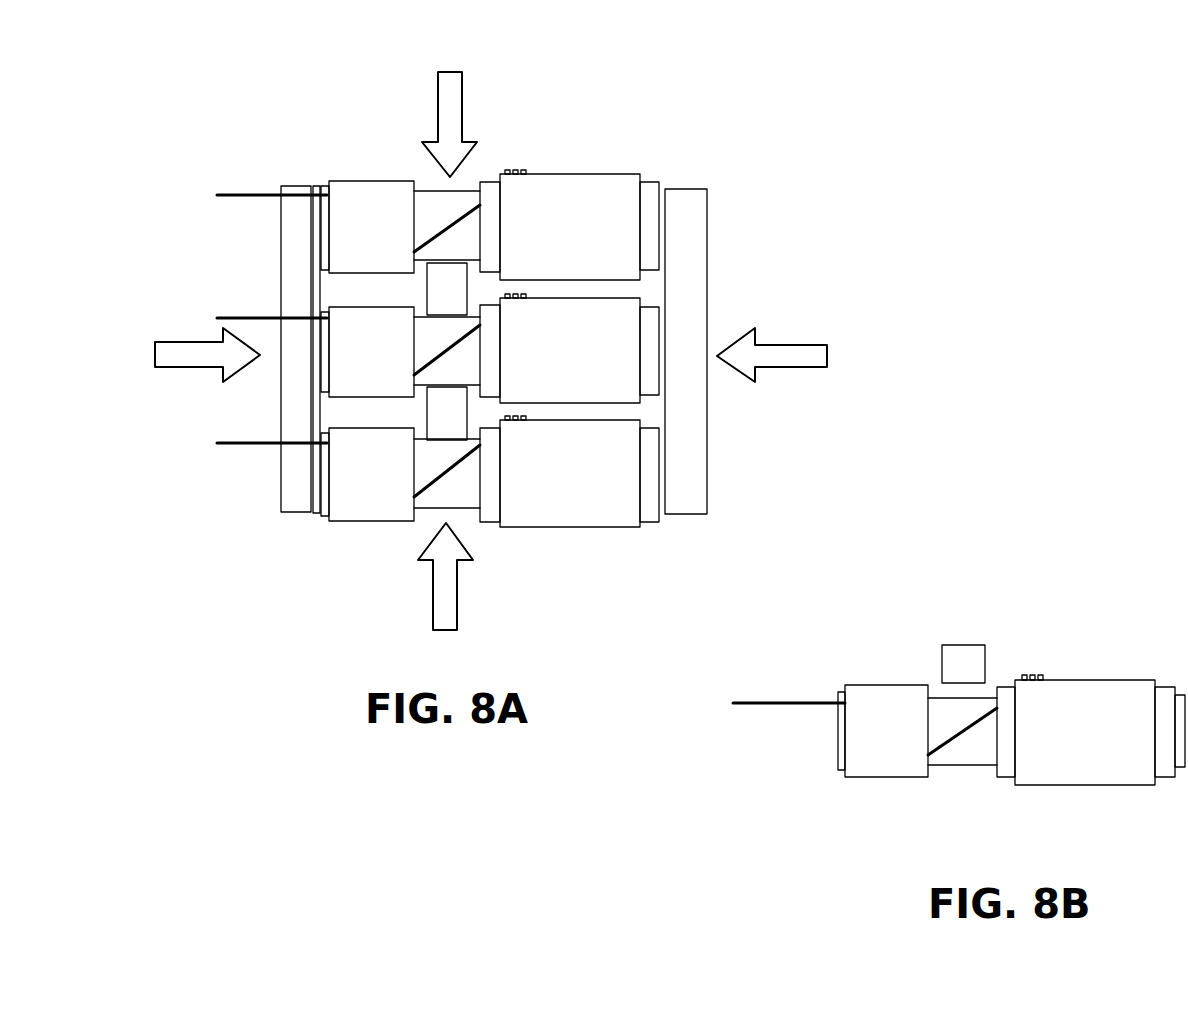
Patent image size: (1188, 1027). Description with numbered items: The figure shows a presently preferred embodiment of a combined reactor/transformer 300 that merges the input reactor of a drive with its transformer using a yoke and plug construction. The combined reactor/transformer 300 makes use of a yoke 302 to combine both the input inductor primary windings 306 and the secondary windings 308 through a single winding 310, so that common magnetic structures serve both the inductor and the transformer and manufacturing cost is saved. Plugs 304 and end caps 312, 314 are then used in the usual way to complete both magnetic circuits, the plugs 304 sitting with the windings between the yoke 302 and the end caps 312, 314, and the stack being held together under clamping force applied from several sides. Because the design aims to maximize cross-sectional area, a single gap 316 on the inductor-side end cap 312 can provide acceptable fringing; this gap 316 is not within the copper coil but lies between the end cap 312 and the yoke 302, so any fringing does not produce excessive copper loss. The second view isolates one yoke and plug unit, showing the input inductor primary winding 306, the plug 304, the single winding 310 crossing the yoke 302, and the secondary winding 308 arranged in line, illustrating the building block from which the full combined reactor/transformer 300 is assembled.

In FIG. 8A, the combined reactor/transformer 300 is at (188, 216).
In FIG. 8A, the yoke 302 is at (468, 187).
In FIG. 8B, the yoke 302 is at (983, 750).
In FIG. 8A, the plug 304 is at (448, 275).
In FIG. 8B, the plug 304 is at (968, 667).
In FIG. 8A, the input inductor primary windings 306 is at (345, 187).
In FIG. 8B, the input inductor primary windings 306 is at (868, 763).
In FIG. 8A, the secondary windings 308 is at (618, 215).
In FIG. 8B, the secondary windings 308 is at (1117, 748).
In FIG. 8A, the single winding 310 is at (442, 187).
In FIG. 8A, the end cap 312 is at (288, 497).
In FIG. 8A, the end cap 314 is at (692, 452).
In FIG. 8A, the gap 316 is at (315, 503).